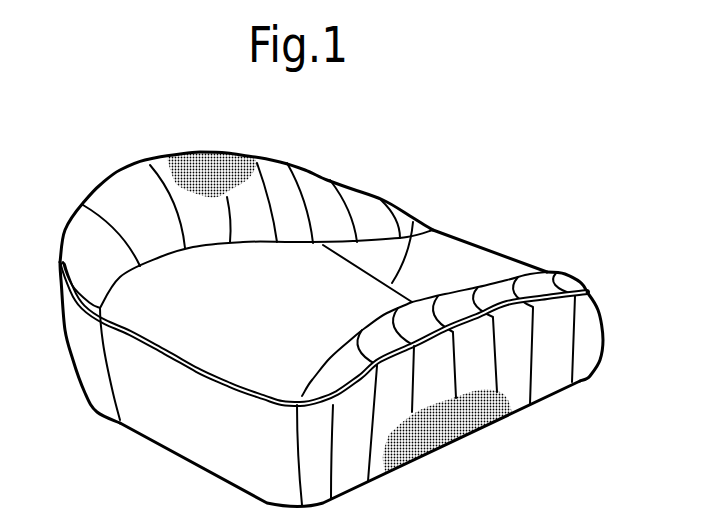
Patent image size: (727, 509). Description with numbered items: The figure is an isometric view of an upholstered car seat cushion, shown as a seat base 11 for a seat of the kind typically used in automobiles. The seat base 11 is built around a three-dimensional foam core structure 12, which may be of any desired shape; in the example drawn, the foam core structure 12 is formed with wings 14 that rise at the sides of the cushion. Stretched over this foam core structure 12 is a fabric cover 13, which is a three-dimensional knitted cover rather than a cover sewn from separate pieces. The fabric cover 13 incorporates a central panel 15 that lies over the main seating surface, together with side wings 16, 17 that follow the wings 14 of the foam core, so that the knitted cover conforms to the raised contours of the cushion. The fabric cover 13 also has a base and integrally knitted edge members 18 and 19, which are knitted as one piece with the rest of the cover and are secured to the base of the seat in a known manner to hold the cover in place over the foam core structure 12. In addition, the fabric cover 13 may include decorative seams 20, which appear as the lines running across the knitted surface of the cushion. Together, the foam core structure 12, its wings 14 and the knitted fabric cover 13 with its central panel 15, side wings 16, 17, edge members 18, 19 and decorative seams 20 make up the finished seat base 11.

The seat base 11 is at (508, 242).
The three-dimensional foam core structure 12 is at (446, 427).
The fabric cover 13 is at (85, 392).
The wings 14 is at (215, 170).
The central panel 15 is at (441, 264).
The side wing 16 is at (573, 280).
The side wing 17 is at (323, 197).
The integrally knitted edge member 18 is at (592, 343).
The integrally knitted edge member 19 is at (183, 460).
The decorative seams 20 is at (413, 222).